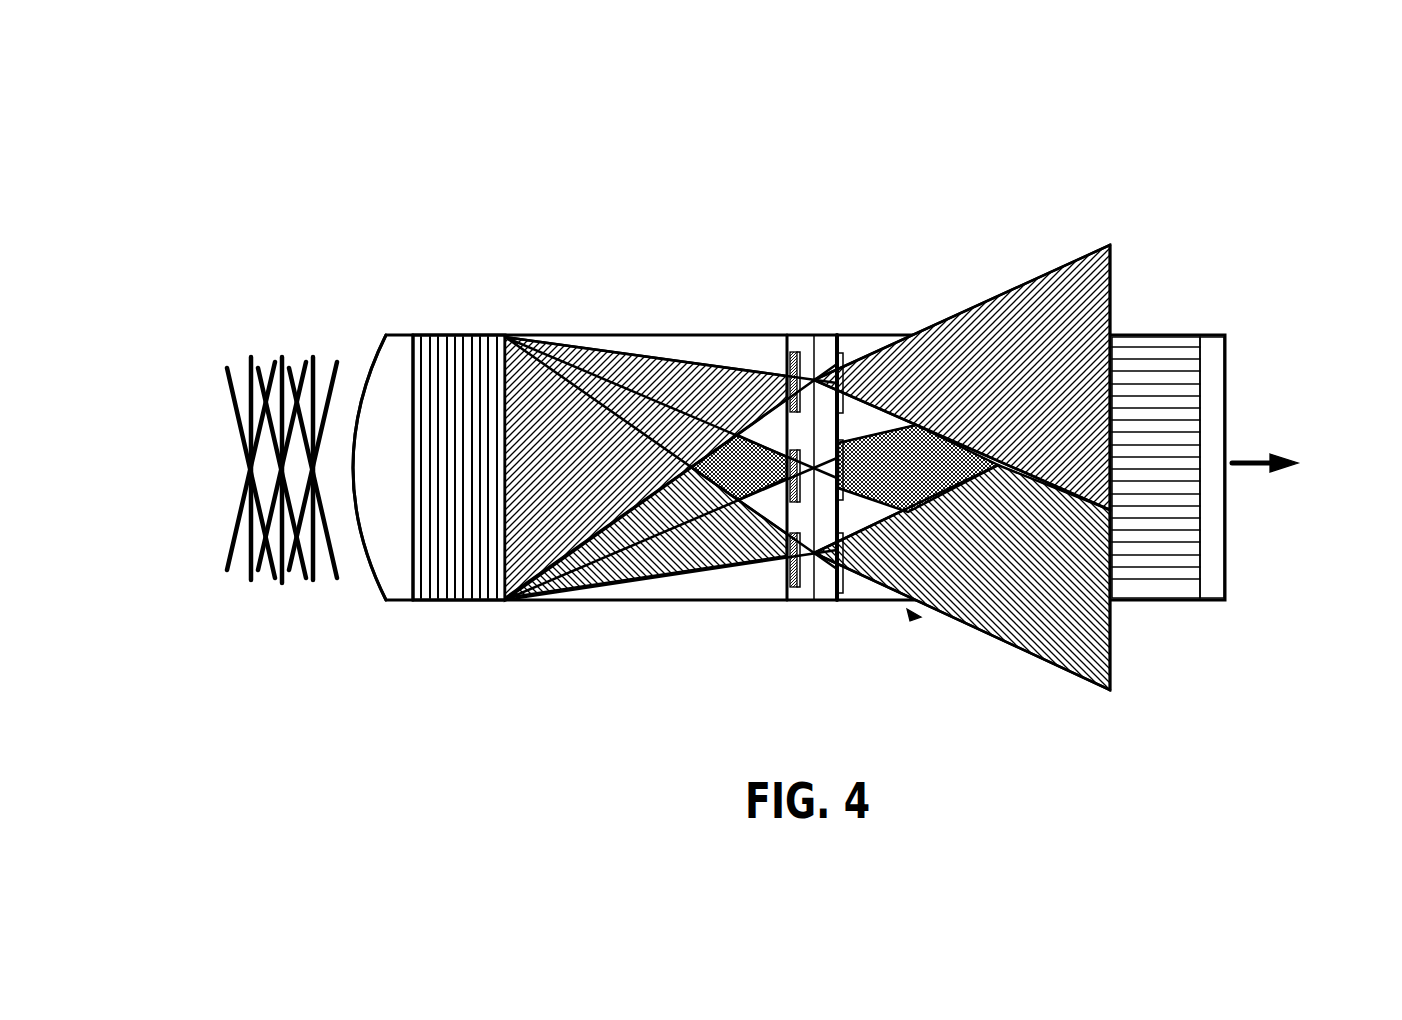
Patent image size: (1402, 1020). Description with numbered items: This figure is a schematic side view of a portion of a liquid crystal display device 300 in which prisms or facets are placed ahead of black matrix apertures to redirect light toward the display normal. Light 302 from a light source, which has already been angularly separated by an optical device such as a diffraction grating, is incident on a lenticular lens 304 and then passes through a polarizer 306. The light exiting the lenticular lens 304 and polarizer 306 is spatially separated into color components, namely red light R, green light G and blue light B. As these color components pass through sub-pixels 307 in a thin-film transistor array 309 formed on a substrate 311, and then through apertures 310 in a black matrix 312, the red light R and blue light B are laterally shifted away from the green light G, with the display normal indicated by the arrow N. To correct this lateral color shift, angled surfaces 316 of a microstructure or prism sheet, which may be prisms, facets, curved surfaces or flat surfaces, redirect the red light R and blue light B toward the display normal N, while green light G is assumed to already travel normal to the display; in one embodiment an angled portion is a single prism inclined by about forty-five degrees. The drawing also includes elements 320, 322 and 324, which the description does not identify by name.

The liquid crystal display device 300 is at (342, 161).
The light 302 is at (233, 469).
The lenticular lens 304 is at (378, 587).
The polarizer 306 is at (462, 600).
The sub-pixels 307 is at (800, 447).
The thin-film transistor array 309 is at (812, 600).
The apertures 310 is at (841, 360).
The substrate 311 is at (648, 600).
The black matrix 312 is at (840, 356).
The angled surfaces 316 is at (810, 380).
The beam edge 320 is at (918, 615).
The output diffuser 322 is at (1171, 601).
The output plate 324 is at (1226, 556).
The blue light B is at (1081, 256).
The green light G is at (757, 505).
The red light R is at (1043, 658).
The display normal N is at (1265, 449).